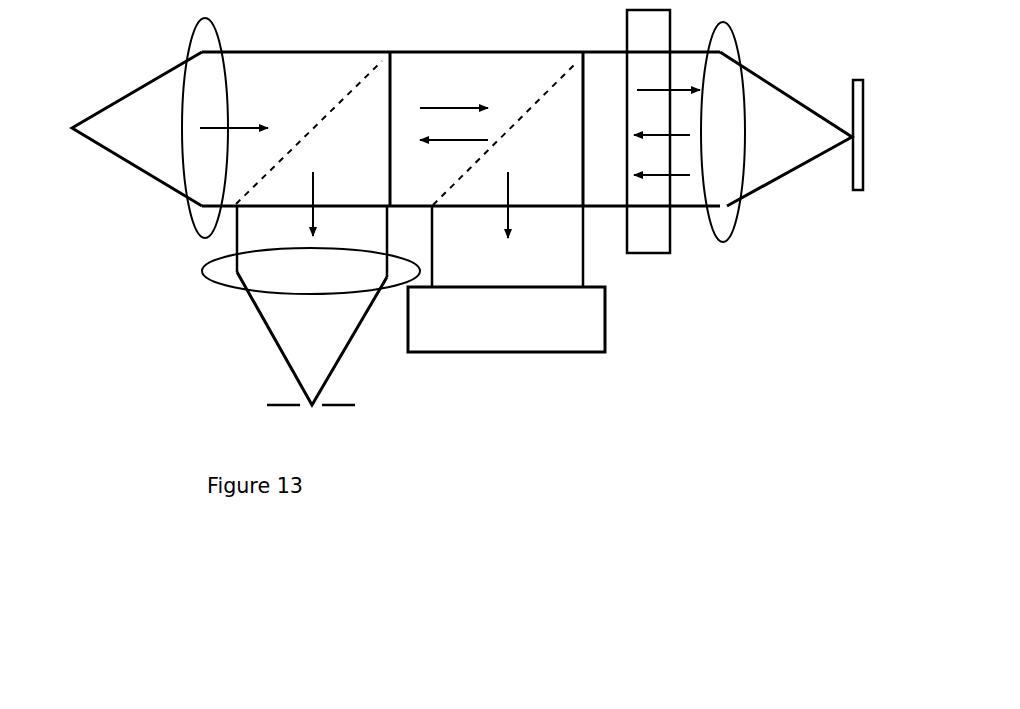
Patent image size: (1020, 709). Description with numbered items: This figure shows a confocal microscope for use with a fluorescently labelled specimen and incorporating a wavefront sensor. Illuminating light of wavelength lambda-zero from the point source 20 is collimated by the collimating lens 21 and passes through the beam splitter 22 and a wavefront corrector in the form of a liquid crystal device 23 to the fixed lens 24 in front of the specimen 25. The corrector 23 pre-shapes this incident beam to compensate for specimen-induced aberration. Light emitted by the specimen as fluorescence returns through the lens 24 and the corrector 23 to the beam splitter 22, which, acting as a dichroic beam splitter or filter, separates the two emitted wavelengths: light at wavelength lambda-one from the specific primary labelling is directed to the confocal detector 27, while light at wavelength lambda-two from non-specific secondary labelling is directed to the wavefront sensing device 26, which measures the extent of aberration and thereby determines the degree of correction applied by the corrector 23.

The point source 20 is at (118, 129).
The collimating lens 21 is at (196, 214).
The beam splitter 22 is at (326, 118).
The wavefront corrector 23 is at (653, 254).
The fixed lens 24 is at (722, 228).
The specimen 25 is at (856, 180).
The wavefront sensor 26 is at (590, 338).
The confocal detector 27 is at (366, 392).